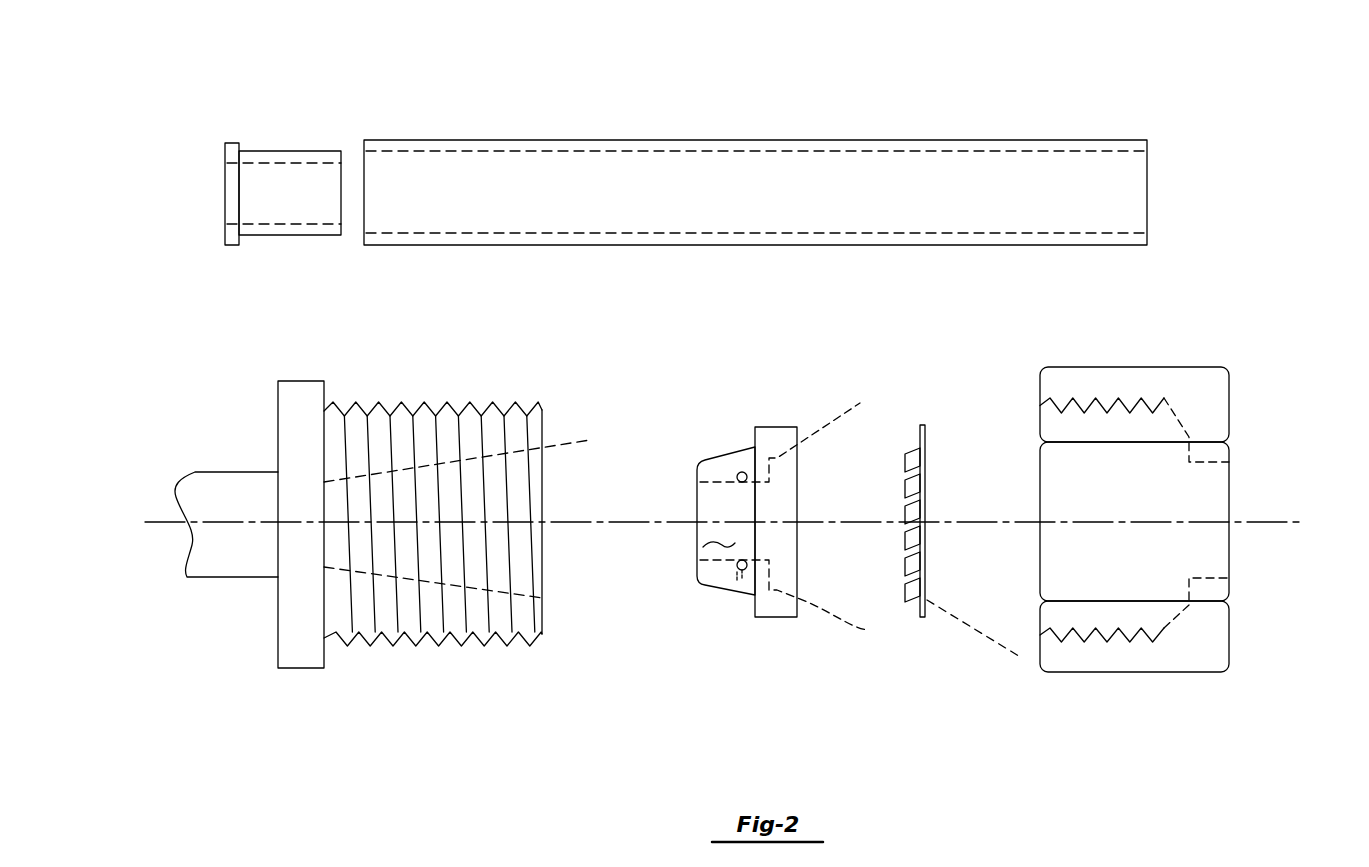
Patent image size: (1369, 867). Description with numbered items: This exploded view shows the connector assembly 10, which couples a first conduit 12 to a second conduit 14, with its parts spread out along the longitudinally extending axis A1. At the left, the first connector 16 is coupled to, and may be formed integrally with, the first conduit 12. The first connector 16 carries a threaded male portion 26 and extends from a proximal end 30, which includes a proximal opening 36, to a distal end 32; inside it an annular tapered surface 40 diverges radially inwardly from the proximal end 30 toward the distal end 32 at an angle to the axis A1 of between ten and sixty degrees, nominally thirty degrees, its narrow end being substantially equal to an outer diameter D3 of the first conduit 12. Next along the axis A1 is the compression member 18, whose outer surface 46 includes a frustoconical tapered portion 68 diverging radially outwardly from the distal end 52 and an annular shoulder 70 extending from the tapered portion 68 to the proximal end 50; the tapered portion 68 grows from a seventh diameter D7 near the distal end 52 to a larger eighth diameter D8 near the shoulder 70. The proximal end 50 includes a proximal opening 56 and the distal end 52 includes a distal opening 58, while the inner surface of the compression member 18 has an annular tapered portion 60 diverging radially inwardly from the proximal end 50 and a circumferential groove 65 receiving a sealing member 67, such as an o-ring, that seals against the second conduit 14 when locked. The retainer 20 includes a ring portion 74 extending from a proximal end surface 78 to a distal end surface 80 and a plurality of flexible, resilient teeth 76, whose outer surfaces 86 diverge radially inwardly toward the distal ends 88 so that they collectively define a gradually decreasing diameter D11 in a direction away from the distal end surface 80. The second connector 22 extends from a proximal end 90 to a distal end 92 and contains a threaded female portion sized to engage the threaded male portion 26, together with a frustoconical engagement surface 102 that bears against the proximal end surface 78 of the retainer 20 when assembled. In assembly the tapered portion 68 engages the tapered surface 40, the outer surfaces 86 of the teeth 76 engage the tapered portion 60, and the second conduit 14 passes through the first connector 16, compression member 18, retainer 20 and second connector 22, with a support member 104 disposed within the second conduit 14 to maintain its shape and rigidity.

The connector assembly 10 is at (1209, 205).
The first conduit 12 is at (269, 458).
The second conduit 14 is at (781, 138).
The first connector 16 is at (493, 530).
The compression member 18 is at (750, 541).
The retainer 20 is at (917, 505).
The second connector 22 is at (1145, 490).
The threaded male portion 26 is at (432, 643).
The proximal end 30 is at (544, 430).
The distal end 32 is at (303, 659).
The proximal opening 36 is at (551, 571).
The tapered surface 40 is at (495, 592).
The outer surface 46 is at (717, 548).
The proximal end 50 is at (798, 600).
The distal end 52 is at (697, 477).
The proximal opening 56 is at (790, 452).
The distal opening 58 is at (693, 510).
The tapered portion 60 is at (799, 601).
The circumferential groove 65 is at (739, 472).
The sealing member 67 is at (740, 571).
The tapered portion 68 is at (742, 471).
The shoulder 70 is at (782, 618).
The ring portion 74 is at (924, 618).
The teeth 76 is at (908, 596).
The proximal end surface 78 is at (926, 437).
The distal end surface 80 is at (912, 437).
The outer surface 86 is at (906, 555).
The distal end 88 is at (908, 548).
The proximal end 90 is at (1230, 482).
The distal end 92 is at (1034, 473).
The engagement surface 102 is at (1185, 612).
The support member 104 is at (222, 136).
The outer diameter D3 is at (695, 139).
The seventh diameter D7 is at (700, 463).
The eighth diameter D8 is at (765, 423).
The gradually decreasing diameter D11 is at (902, 488).
The axis A1 is at (1265, 520).